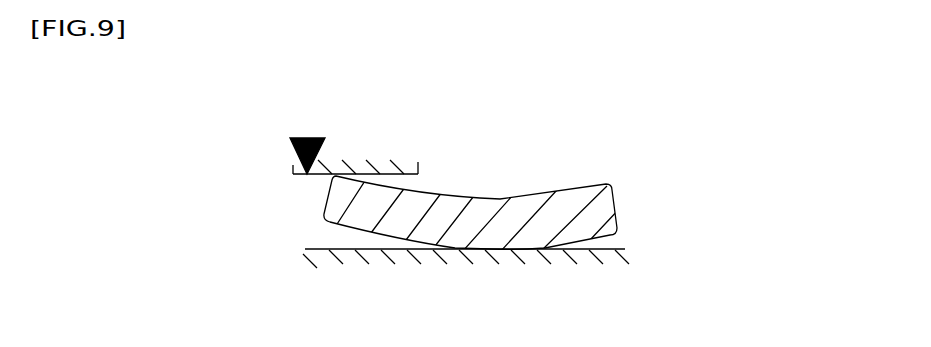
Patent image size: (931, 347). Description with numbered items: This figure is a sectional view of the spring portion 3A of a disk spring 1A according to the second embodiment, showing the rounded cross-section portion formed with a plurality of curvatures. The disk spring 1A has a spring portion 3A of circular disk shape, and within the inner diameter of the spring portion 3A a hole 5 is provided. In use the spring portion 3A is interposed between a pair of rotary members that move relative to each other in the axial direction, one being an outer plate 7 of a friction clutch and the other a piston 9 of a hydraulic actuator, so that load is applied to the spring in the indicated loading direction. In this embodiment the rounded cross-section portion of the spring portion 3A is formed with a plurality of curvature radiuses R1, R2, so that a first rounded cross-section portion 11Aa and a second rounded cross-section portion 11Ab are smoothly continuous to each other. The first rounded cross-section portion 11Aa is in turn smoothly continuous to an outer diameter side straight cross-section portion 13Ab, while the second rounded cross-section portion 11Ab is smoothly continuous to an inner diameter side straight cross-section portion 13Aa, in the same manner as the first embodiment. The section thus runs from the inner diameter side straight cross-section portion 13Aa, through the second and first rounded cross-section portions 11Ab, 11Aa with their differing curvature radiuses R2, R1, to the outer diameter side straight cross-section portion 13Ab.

The disk spring 1A is at (472, 158).
The spring portion 3A is at (577, 183).
The hole 5 is at (327, 197).
The outer plate 7 is at (327, 252).
The piston 9 is at (292, 182).
The first rounded cross-section portion 11Aa is at (497, 249).
The second rounded cross-section portion 11Ab is at (431, 249).
The inner diameter side straight cross-section portion 13Aa is at (368, 228).
The outer diameter side straight cross-section portion 13Ab is at (582, 240).
The curvature radius R1 is at (498, 247).
The curvature radius R2 is at (437, 245).